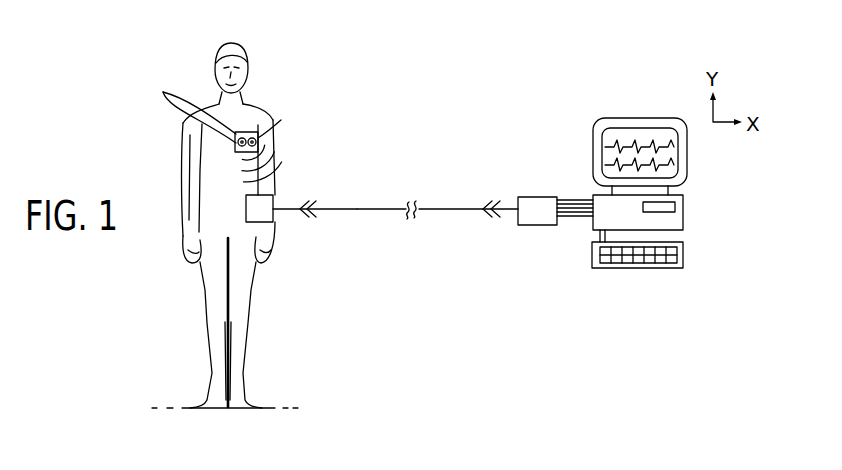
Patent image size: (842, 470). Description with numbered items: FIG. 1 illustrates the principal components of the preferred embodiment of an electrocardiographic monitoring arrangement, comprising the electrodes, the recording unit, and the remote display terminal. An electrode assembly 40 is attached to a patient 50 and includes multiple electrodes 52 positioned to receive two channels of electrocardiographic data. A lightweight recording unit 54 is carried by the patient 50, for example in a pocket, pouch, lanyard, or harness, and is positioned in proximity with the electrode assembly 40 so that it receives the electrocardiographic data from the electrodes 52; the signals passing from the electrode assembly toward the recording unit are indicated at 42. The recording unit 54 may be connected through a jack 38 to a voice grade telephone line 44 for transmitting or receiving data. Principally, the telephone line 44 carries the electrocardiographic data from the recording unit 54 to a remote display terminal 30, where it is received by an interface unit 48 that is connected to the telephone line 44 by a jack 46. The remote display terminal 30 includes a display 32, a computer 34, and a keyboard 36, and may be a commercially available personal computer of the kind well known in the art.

The remote display terminal 30 is at (593, 104).
The display 32 is at (638, 118).
The computer 34 is at (683, 213).
The keyboard 36 is at (683, 253).
The jack 38 is at (299, 230).
The electrode assembly 40 is at (262, 138).
The transmitted signals 42 is at (284, 162).
The voice grade telephone line 44 is at (357, 209).
The jack 46 is at (489, 219).
The interface unit 48 is at (537, 197).
The patient 50 is at (258, 77).
The electrodes 52 is at (163, 92).
The recording unit 54 is at (278, 197).